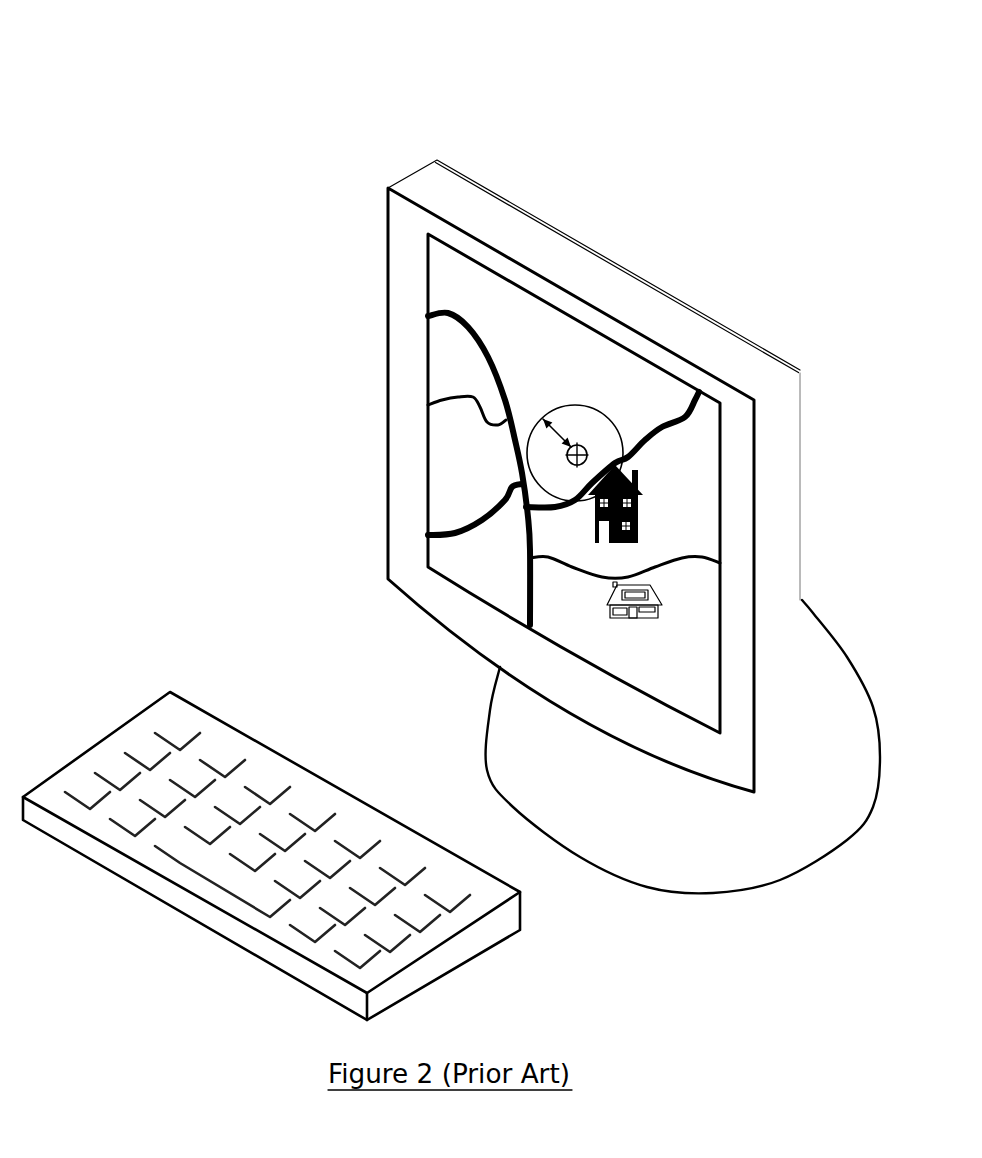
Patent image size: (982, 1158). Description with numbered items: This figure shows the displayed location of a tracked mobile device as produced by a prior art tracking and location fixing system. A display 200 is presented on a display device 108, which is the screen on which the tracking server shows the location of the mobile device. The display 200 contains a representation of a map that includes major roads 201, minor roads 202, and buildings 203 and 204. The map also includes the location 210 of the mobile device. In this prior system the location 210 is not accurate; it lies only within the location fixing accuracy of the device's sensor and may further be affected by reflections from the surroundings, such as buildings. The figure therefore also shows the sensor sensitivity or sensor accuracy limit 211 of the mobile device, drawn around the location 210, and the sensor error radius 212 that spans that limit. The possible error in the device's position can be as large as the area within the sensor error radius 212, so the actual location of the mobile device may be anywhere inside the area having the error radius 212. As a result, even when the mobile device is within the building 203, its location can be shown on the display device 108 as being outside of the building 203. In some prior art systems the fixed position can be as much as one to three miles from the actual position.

The display 200 is at (372, 63).
The display device 108 is at (540, 303).
The major roads 201 is at (500, 369).
The minor roads 202 is at (680, 563).
The building 203 is at (588, 454).
The building 204 is at (663, 612).
The location 210 is at (640, 513).
The sensor accuracy limit 211 is at (527, 475).
The sensor error radius 212 is at (547, 419).